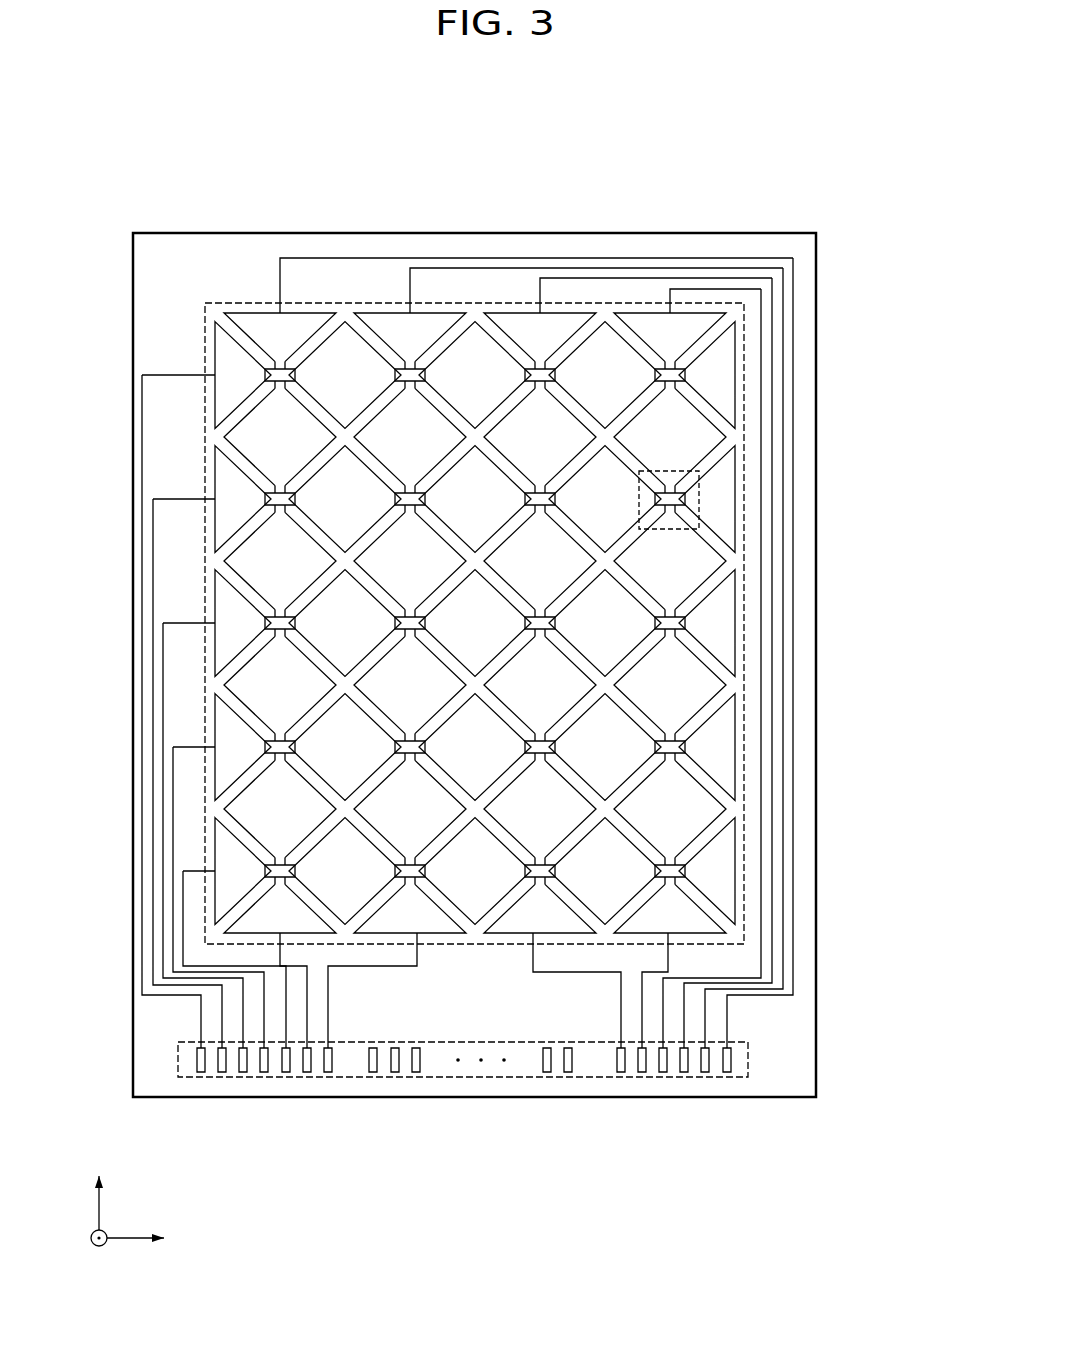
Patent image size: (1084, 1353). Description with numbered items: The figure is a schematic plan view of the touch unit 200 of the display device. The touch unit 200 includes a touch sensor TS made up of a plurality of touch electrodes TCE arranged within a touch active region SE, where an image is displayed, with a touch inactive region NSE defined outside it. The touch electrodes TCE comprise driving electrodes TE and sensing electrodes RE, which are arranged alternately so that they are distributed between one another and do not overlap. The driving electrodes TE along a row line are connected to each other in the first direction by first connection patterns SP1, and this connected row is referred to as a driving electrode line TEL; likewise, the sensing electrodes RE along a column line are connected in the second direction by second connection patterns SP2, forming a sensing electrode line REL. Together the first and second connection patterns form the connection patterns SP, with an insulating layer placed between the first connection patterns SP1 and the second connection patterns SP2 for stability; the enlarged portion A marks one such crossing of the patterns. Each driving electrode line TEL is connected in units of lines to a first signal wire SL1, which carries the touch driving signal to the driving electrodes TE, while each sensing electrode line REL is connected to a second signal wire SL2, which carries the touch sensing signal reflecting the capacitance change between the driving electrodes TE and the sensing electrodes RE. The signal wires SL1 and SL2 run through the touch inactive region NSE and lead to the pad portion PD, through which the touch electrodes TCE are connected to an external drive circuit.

The touch unit 200 is at (786, 160).
The sensing electrode line REL is at (303, 300).
The driving electrode TE is at (604, 340).
The enlarged area A is at (668, 470).
The touch sensor TS is at (506, 558).
The driving electrode line TEL is at (213, 349).
The first signal wire SL1 is at (142, 587).
The sensing electrode RE is at (692, 440).
The touch active region SE is at (749, 486).
The second connection pattern SP2 is at (673, 490).
The first connection pattern SP1 is at (676, 500).
The connection pattern SP is at (611, 623).
The second signal wire SL2 is at (793, 617).
The touch inactive region NSE is at (816, 667).
The pad portion PD is at (462, 1078).
The touch electrode TCE is at (832, 1211).